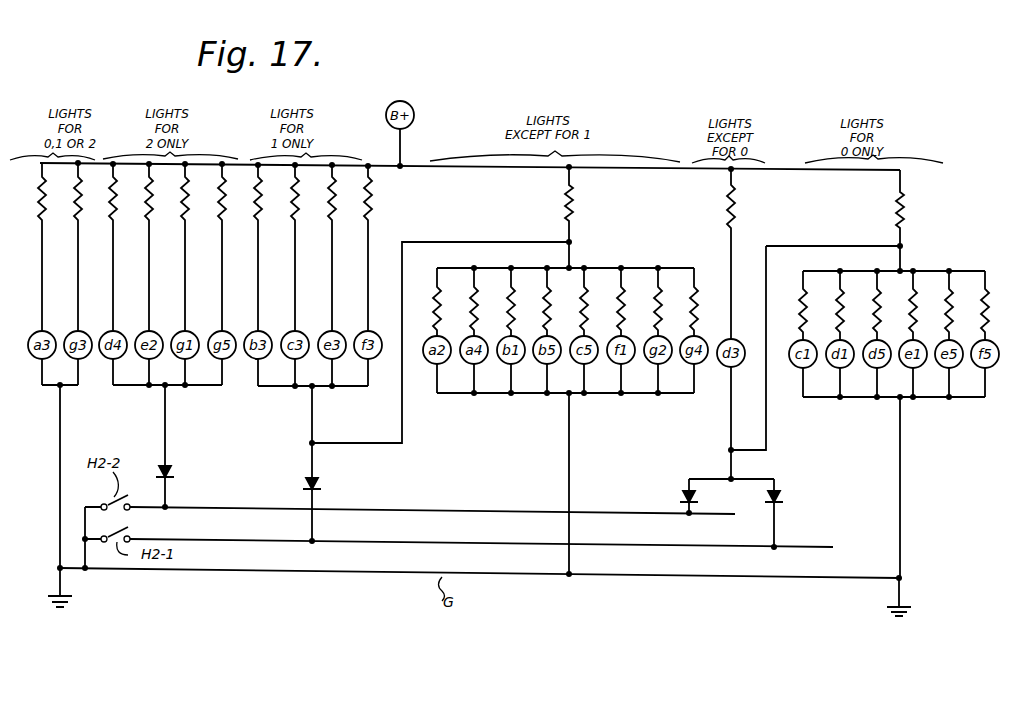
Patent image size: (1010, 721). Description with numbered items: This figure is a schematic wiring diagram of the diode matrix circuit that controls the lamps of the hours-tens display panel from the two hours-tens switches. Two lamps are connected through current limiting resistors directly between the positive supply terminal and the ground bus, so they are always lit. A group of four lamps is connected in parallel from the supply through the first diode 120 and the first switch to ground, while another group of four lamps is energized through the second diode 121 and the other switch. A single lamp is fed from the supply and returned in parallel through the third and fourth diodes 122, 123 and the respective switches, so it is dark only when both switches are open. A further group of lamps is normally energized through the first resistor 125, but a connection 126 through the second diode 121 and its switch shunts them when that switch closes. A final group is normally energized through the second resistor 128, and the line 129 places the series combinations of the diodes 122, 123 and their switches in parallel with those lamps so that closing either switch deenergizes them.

The first diode 120 is at (170, 472).
The second diode 121 is at (318, 484).
The third diode 122 is at (683, 495).
The fourth diode 123 is at (783, 504).
The first resistor 125 is at (576, 210).
The connection 126 is at (419, 240).
The second resistor 128 is at (904, 210).
The line 129 is at (790, 245).